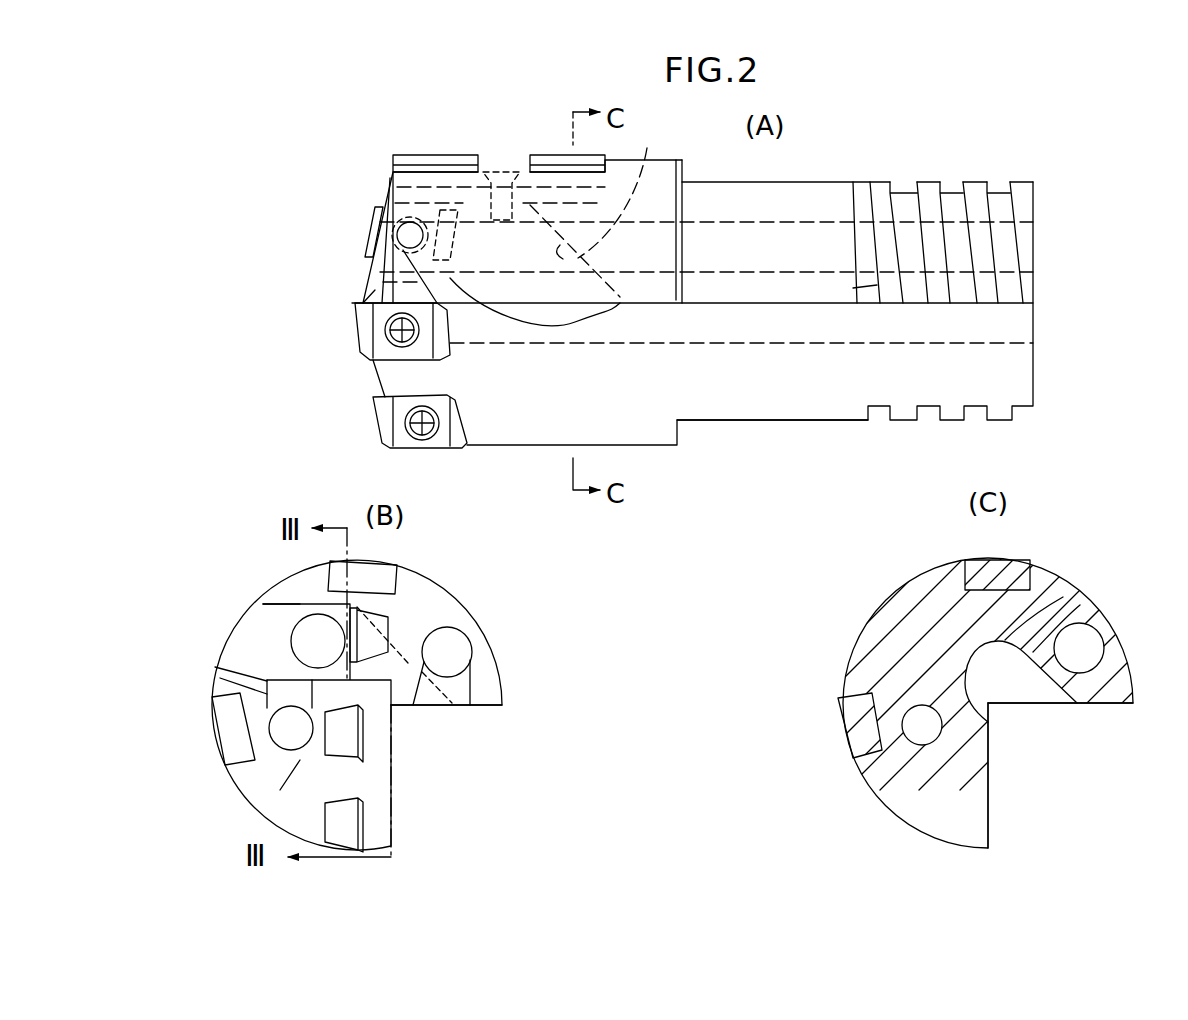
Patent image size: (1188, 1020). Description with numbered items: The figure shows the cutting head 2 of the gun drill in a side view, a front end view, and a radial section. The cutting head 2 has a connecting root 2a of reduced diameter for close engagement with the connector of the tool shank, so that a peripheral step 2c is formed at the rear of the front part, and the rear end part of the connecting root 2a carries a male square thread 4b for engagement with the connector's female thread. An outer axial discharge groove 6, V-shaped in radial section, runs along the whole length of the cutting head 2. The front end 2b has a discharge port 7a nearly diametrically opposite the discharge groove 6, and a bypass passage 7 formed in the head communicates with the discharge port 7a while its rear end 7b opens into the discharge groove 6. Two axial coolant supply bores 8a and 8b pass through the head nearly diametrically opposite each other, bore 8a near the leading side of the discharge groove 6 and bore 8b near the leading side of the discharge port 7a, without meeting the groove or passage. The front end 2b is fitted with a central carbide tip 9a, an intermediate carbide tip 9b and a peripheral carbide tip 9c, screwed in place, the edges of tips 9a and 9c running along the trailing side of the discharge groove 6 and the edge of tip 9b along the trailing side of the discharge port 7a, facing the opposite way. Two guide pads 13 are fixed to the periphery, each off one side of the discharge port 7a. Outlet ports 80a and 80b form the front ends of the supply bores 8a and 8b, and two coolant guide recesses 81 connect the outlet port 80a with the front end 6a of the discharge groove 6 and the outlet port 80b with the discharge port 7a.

The cutting head 2 is at (462, 598).
The connecting root 2a is at (775, 182).
The front end 2b is at (368, 265).
The peripheral step 2c is at (680, 166).
The male square thread 4b is at (930, 182).
The discharge groove 6 is at (773, 392).
The front end of the discharge groove 6a is at (480, 712).
The bypass passage 7 is at (1002, 662).
The discharge port 7a is at (262, 645).
The rear end of the bypass passage 7b is at (572, 318).
The coolant supply bore 8a is at (783, 230).
The coolant supply bore 8b is at (966, 336).
The central carbide tip 9a is at (357, 330).
The intermediate carbide tip 9b is at (368, 228).
The peripheral carbide tip 9c is at (378, 418).
The guide pad 13 is at (440, 155).
The outlet port 80a is at (452, 652).
The outlet port 80b is at (287, 737).
The coolant guide recess 81 is at (365, 283).